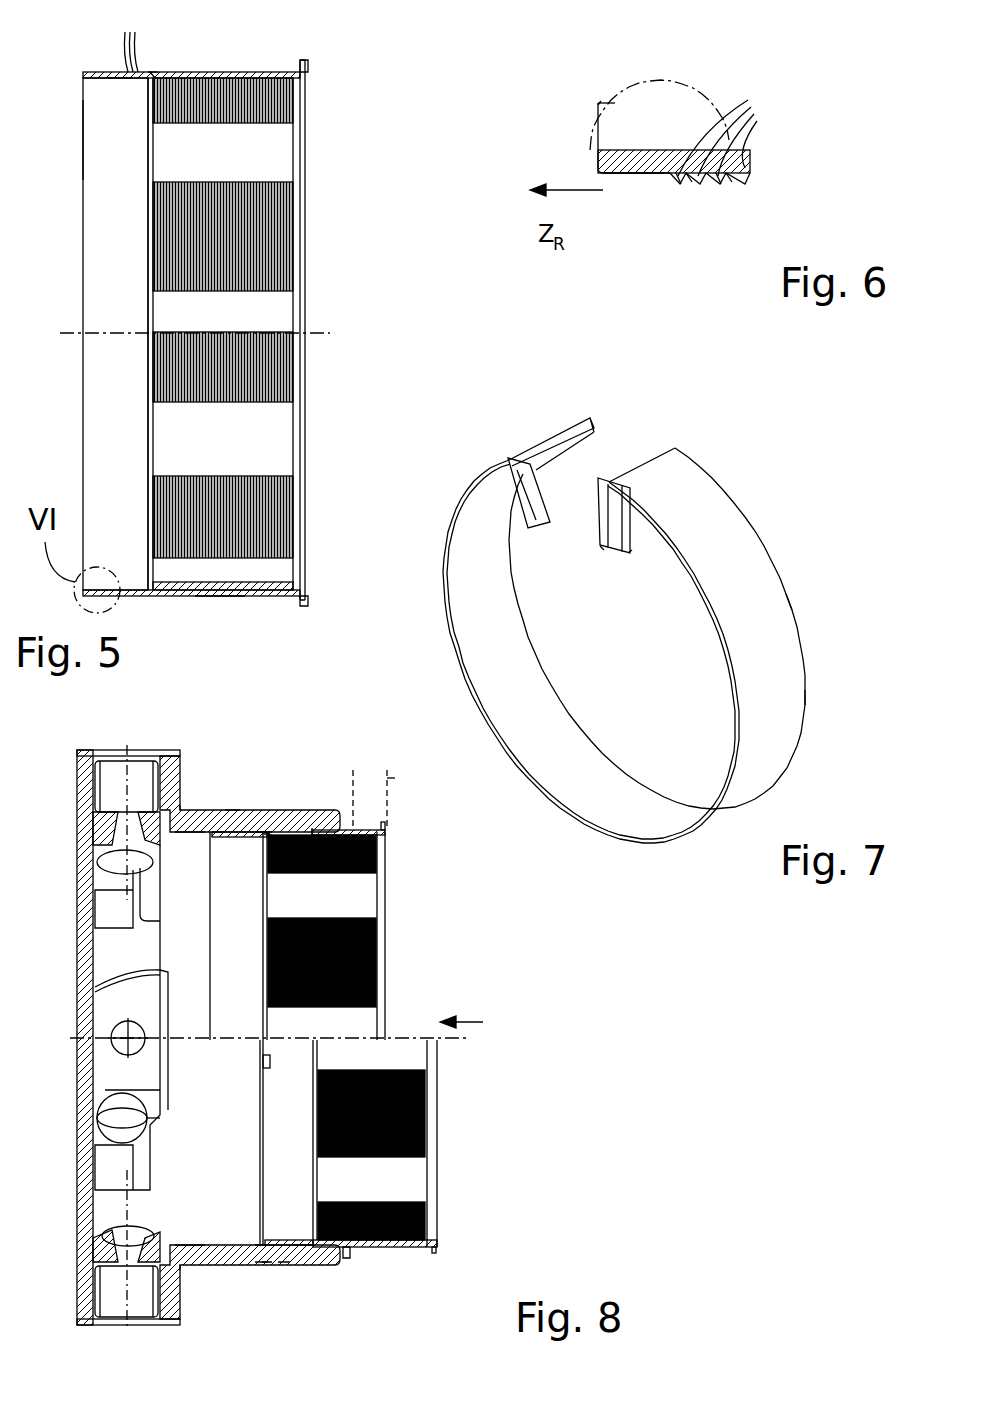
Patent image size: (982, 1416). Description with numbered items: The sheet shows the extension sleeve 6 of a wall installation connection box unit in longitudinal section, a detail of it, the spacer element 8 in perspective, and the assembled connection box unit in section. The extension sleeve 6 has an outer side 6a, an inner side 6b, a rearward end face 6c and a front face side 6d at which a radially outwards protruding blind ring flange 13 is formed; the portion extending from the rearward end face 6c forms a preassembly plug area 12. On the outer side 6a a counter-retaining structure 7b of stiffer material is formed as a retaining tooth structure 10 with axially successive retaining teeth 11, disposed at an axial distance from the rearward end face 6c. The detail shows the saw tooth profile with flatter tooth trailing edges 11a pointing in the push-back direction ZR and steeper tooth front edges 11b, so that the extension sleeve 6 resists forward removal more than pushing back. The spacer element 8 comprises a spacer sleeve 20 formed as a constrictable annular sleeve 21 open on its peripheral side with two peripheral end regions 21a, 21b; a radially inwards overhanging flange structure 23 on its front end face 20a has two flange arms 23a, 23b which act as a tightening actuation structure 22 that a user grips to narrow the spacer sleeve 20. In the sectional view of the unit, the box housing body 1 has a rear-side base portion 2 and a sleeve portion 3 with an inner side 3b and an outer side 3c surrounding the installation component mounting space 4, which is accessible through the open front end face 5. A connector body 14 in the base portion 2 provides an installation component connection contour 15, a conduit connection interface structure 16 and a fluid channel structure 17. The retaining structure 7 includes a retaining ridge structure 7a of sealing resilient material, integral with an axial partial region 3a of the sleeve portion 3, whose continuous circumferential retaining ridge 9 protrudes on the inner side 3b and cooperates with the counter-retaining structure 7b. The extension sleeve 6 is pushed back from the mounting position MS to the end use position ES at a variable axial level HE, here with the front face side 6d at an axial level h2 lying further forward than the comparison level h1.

In FIG. 8, the box housing body 1 is at (183, 808).
In FIG. 8, the base portion 2 is at (183, 800).
In FIG. 8, the sleeve portion 3 is at (225, 1264).
In FIG. 8, the axial partial region 3a is at (266, 830).
In FIG. 8, the inner side 3b is at (188, 834).
In FIG. 8, the outer side 3c is at (232, 810).
In FIG. 8, the installation component mounting space 4 is at (183, 1004).
In FIG. 8, the open front end face 5 is at (340, 828).
In FIG. 5, the extension sleeve 6 is at (100, 300).
In FIG. 6, the extension sleeve 6 is at (598, 146).
In FIG. 8, the extension sleeve 6 is at (410, 998).
In FIG. 5, the outer side 6a is at (215, 598).
In FIG. 8, the outer side 6a is at (312, 830).
In FIG. 5, the inner side 6b is at (118, 80).
In FIG. 8, the inner side 6b is at (306, 1243).
In FIG. 5, the rearward end face 6c is at (83, 138).
In FIG. 6, the rearward end face 6c is at (598, 116).
In FIG. 8, the rearward end face 6c is at (208, 946).
In FIG. 8, the front face side 6d is at (438, 1234).
In FIG. 8, the retaining structure 7 is at (270, 832).
In FIG. 8, the retaining ridge structure 7a is at (265, 832).
In FIG. 5, the counter-retaining structure 7b is at (152, 72).
In FIG. 6, the counter-retaining structure 7b is at (755, 166).
In FIG. 8, the counter-retaining structure 7b is at (247, 840).
In FIG. 7, the spacer element 8 is at (795, 566).
In FIG. 8, the retaining ridge 9 is at (262, 832).
In FIG. 5, the retaining tooth structure 10 is at (155, 72).
In FIG. 6, the retaining tooth structure 10 is at (678, 162).
In FIG. 5, the retaining teeth 11 is at (122, 38).
In FIG. 6, the retaining teeth 11 is at (738, 137).
In FIG. 6, the tooth trailing edges 11a is at (681, 185).
In FIG. 6, the tooth front edges 11b is at (748, 182).
In FIG. 6, the preassembly plug area 12 is at (628, 174).
In FIG. 8, the preassembly plug area 12 is at (220, 832).
In FIG. 5, the blind ring flange 13 is at (305, 604).
In FIG. 8, the blind ring flange 13 is at (388, 833).
In FIG. 8, the connector body 14 is at (95, 834).
In FIG. 8, the installation component connection contour 15 is at (150, 1158).
In FIG. 8, the conduit connection interface structure 16 is at (108, 762).
In FIG. 8, the fluid channel structure 17 is at (125, 861).
In FIG. 7, the spacer sleeve 20 is at (775, 662).
In FIG. 7, the front end face 20a is at (452, 570).
In FIG. 7, the annular sleeve 21 is at (770, 770).
In FIG. 7, the peripheral end region 21a is at (580, 432).
In FIG. 7, the peripheral end region 21b is at (656, 446).
In FIG. 7, the tightening actuation structure 22 is at (608, 542).
In FIG. 7, the flange structure 23 is at (616, 506).
In FIG. 7, the flange arm 23a is at (522, 500).
In FIG. 7, the flange arm 23b is at (628, 518).
In FIG. 8, the axial level h1 is at (367, 769).
In FIG. 8, the axial level h2 is at (395, 787).
In FIG. 8, the axial level HE is at (390, 774).
In FIG. 8, the end use position ES is at (360, 897).
In FIG. 8, the mounting position MS is at (415, 1178).
In FIG. 8, the push-back direction ZR is at (480, 1020).